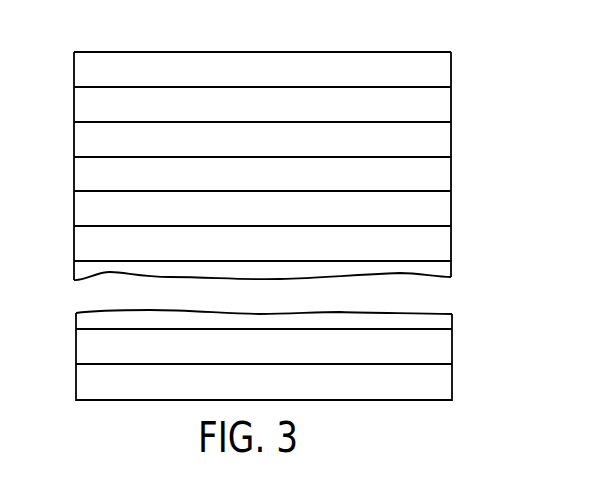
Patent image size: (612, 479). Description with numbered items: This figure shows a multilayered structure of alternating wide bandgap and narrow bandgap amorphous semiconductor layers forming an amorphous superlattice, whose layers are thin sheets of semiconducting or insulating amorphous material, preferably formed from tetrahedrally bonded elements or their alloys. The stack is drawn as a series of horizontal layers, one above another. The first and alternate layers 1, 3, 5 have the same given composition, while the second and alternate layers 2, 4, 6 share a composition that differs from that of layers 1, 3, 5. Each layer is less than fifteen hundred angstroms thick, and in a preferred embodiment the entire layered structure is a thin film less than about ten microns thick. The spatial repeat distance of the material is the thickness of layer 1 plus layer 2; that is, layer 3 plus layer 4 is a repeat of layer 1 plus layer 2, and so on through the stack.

The first layer 1 is at (451, 63).
The second layer 2 is at (451, 108).
The third layer 3 is at (451, 143).
The fourth layer 4 is at (451, 178).
The fifth layer 5 is at (451, 210).
The sixth layer 6 is at (451, 245).